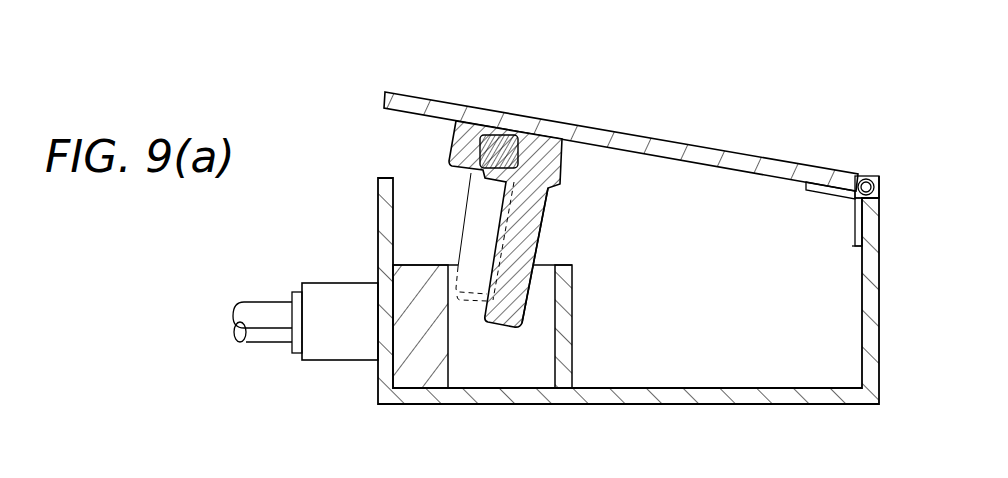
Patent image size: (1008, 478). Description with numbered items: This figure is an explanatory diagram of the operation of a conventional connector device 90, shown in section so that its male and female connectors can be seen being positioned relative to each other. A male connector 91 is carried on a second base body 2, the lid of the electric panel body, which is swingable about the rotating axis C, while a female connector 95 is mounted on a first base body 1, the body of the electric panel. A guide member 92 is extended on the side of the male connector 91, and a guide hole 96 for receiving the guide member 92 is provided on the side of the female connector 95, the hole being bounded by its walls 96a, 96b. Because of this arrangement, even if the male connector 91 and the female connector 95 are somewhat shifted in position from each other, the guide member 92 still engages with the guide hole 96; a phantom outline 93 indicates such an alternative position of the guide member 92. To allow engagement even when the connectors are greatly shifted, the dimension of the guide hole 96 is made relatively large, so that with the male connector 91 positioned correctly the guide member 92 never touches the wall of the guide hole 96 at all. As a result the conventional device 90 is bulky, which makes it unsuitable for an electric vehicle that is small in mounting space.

The first base body 1 is at (672, 394).
The second base body 2 is at (720, 158).
The rotating axis C is at (877, 178).
The conventional device 90 is at (578, 59).
The male connector 91 is at (416, 143).
The guide member 92 is at (522, 231).
The pin alternate position (phantom) 93 is at (480, 241).
The female connector 95 is at (598, 333).
The guide hole 96 is at (504, 375).
The cavity right wall 96a is at (556, 347).
The cavity left wall 96b is at (450, 362).